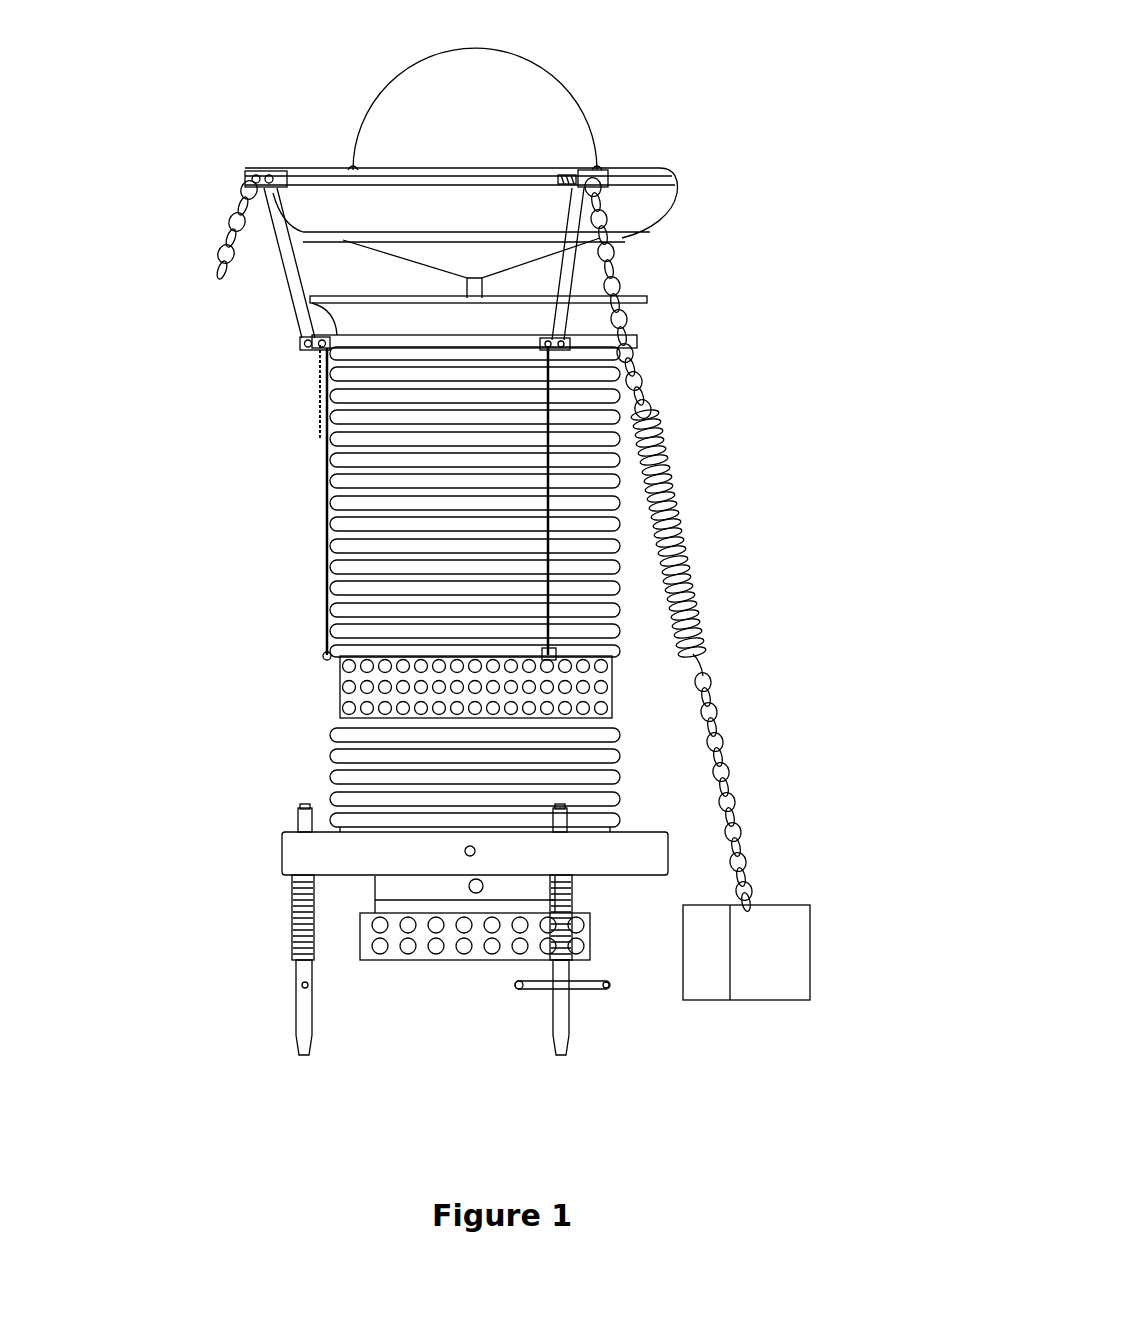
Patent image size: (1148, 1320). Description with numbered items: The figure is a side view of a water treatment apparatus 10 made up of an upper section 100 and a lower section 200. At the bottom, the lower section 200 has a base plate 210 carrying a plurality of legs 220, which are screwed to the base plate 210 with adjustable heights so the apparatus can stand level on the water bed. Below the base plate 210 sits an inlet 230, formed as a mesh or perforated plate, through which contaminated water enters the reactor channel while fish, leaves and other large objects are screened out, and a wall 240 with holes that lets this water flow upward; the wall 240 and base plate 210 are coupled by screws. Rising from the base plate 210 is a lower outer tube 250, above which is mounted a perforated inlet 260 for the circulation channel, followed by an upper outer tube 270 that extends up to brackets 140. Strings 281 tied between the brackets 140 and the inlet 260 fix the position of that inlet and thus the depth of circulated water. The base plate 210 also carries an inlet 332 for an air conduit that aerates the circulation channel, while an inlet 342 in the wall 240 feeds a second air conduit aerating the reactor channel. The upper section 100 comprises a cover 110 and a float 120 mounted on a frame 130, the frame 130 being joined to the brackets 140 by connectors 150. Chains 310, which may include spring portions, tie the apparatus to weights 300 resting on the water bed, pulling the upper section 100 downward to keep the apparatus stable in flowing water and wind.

The water treatment apparatus 10 is at (750, 86).
The upper section 100 is at (170, 53).
The cover 110 is at (502, 118).
The float 120 is at (640, 212).
The frame 130 is at (657, 177).
The brackets 140 is at (355, 343).
The connectors 150 is at (575, 271).
The lower section 200 is at (170, 345).
The base plate 210 is at (313, 860).
The legs 220 is at (298, 961).
The inlet 230 is at (383, 963).
The wall 240 is at (397, 887).
The lower outer tube 250 is at (348, 782).
The inlet 260 is at (332, 694).
The upper outer tube 270 is at (390, 533).
The strings 281 is at (555, 461).
The weights 300 is at (776, 934).
The chains 310 is at (222, 212).
The inlet 332 is at (480, 851).
The inlet 342 is at (486, 886).